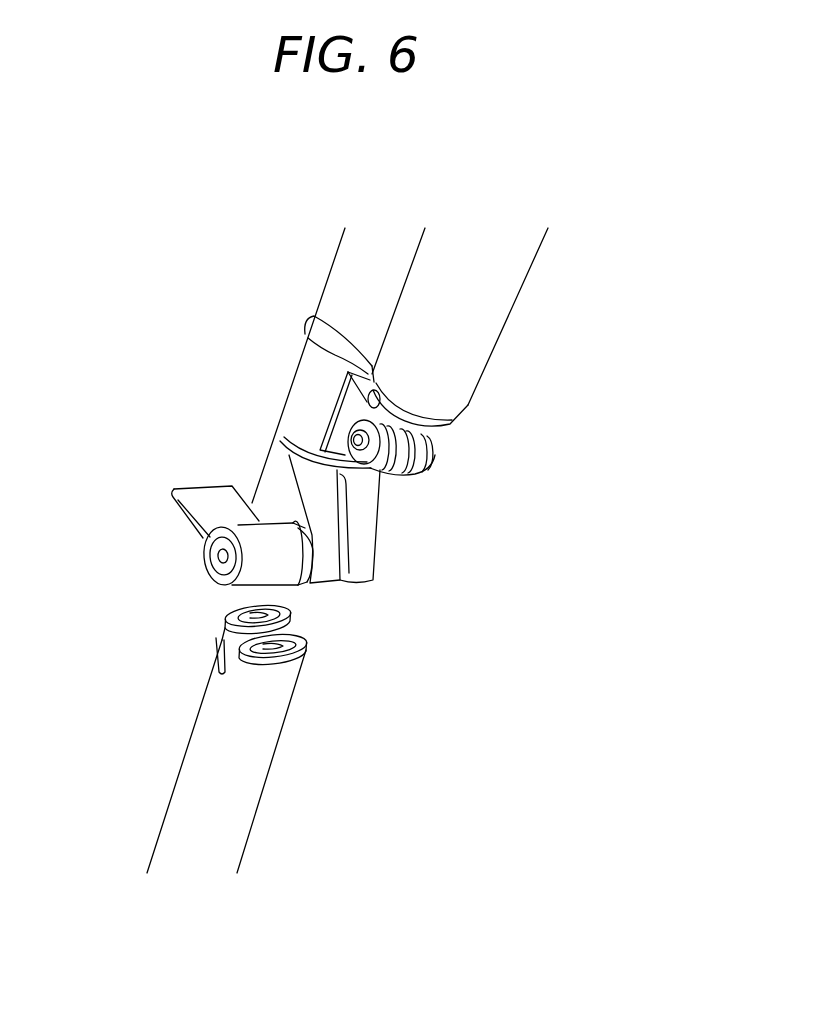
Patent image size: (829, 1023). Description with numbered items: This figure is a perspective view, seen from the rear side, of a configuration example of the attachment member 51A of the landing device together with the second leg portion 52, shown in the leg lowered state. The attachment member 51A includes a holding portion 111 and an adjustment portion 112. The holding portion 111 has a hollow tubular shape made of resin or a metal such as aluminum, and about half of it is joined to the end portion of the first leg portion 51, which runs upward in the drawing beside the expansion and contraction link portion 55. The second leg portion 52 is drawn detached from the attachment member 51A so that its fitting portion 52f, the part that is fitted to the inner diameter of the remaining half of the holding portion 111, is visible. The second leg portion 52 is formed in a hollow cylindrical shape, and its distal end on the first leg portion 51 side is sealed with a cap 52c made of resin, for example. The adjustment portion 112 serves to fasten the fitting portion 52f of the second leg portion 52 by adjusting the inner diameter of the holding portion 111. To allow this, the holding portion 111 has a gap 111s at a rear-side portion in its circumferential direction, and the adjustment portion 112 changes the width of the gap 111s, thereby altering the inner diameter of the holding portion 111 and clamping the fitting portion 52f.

The first leg portion 51 is at (335, 258).
The attachment member 51A is at (198, 405).
The second leg portion 52 is at (189, 738).
The cap 52c is at (252, 656).
The fitting portion 52f is at (181, 663).
The expansion and contraction link portion 55 is at (523, 330).
The holding portion 111 is at (294, 380).
The gap 111s is at (342, 602).
The adjustment portion 112 is at (188, 512).